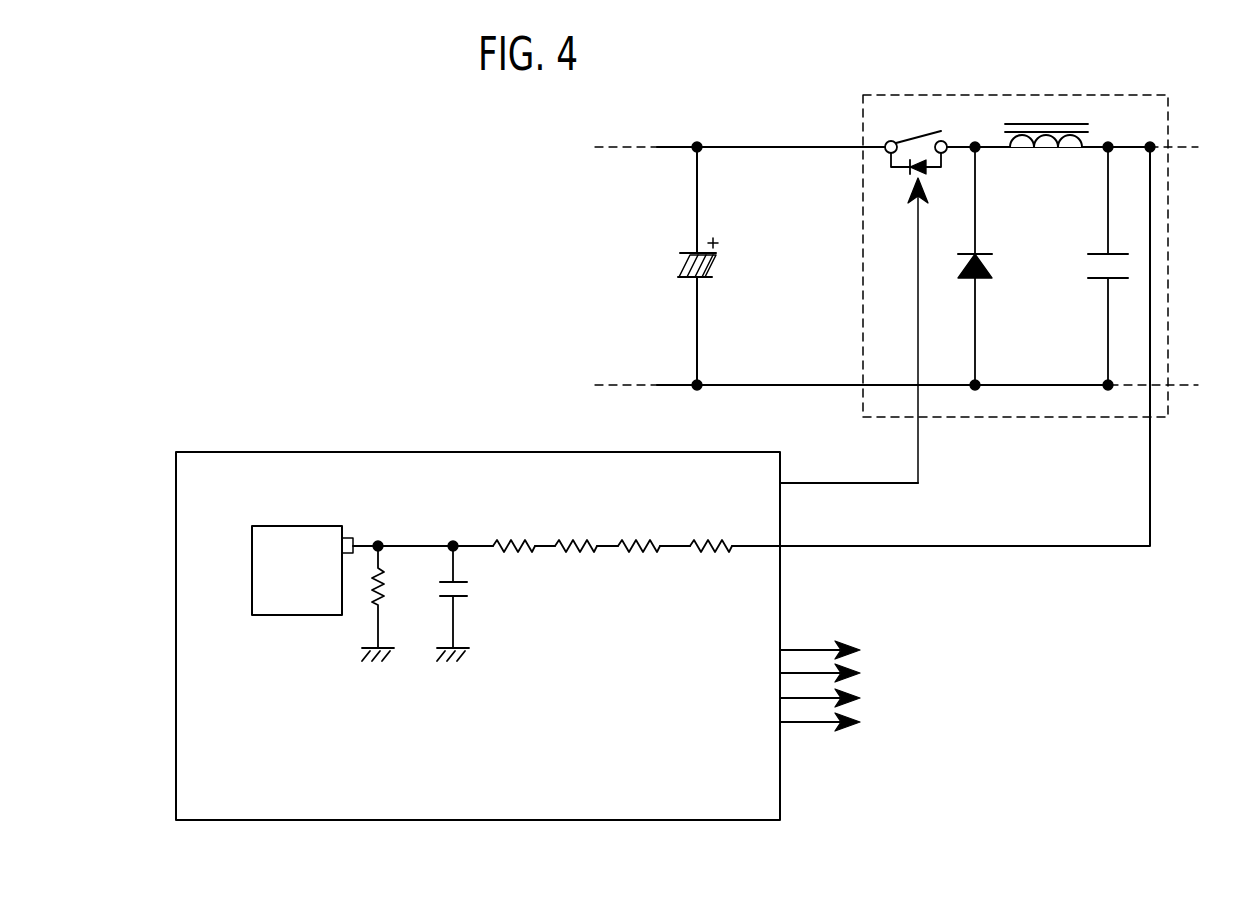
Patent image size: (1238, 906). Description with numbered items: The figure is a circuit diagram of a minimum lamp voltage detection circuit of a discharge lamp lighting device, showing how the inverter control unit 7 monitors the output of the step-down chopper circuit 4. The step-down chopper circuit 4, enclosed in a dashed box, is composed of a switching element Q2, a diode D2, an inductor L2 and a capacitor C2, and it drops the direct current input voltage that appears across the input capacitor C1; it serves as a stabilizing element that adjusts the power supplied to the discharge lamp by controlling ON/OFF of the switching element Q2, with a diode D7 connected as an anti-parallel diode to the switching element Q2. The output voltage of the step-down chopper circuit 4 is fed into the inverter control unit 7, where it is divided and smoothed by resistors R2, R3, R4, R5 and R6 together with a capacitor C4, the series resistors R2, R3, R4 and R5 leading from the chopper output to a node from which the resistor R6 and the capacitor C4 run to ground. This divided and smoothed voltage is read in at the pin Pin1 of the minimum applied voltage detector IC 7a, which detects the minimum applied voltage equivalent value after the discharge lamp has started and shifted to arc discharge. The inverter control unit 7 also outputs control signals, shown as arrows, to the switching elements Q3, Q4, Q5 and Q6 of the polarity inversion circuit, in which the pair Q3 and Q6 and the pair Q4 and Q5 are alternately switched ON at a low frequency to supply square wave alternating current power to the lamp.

The step-down chopper circuit 4 is at (935, 95).
The inverter control unit 7 is at (298, 450).
The minimum applied voltage detector IC 7a is at (308, 615).
The capacitor C1 is at (708, 266).
The switching element Q2 is at (916, 130).
The diode D7 is at (872, 318).
The diode D2 is at (986, 266).
The inductor L2 is at (1046, 121).
The capacitor C2 is at (1101, 266).
The pin Pin1 is at (323, 546).
The resistor R6 is at (391, 603).
The capacitor C4 is at (468, 603).
The resistor R5 is at (514, 531).
The resistor R4 is at (576, 531).
The resistor R3 is at (639, 531).
The resistor R2 is at (711, 531).
The switching element Q3 is at (839, 649).
The switching element Q4 is at (839, 672).
The switching element Q5 is at (839, 697).
The switching element Q6 is at (839, 721).